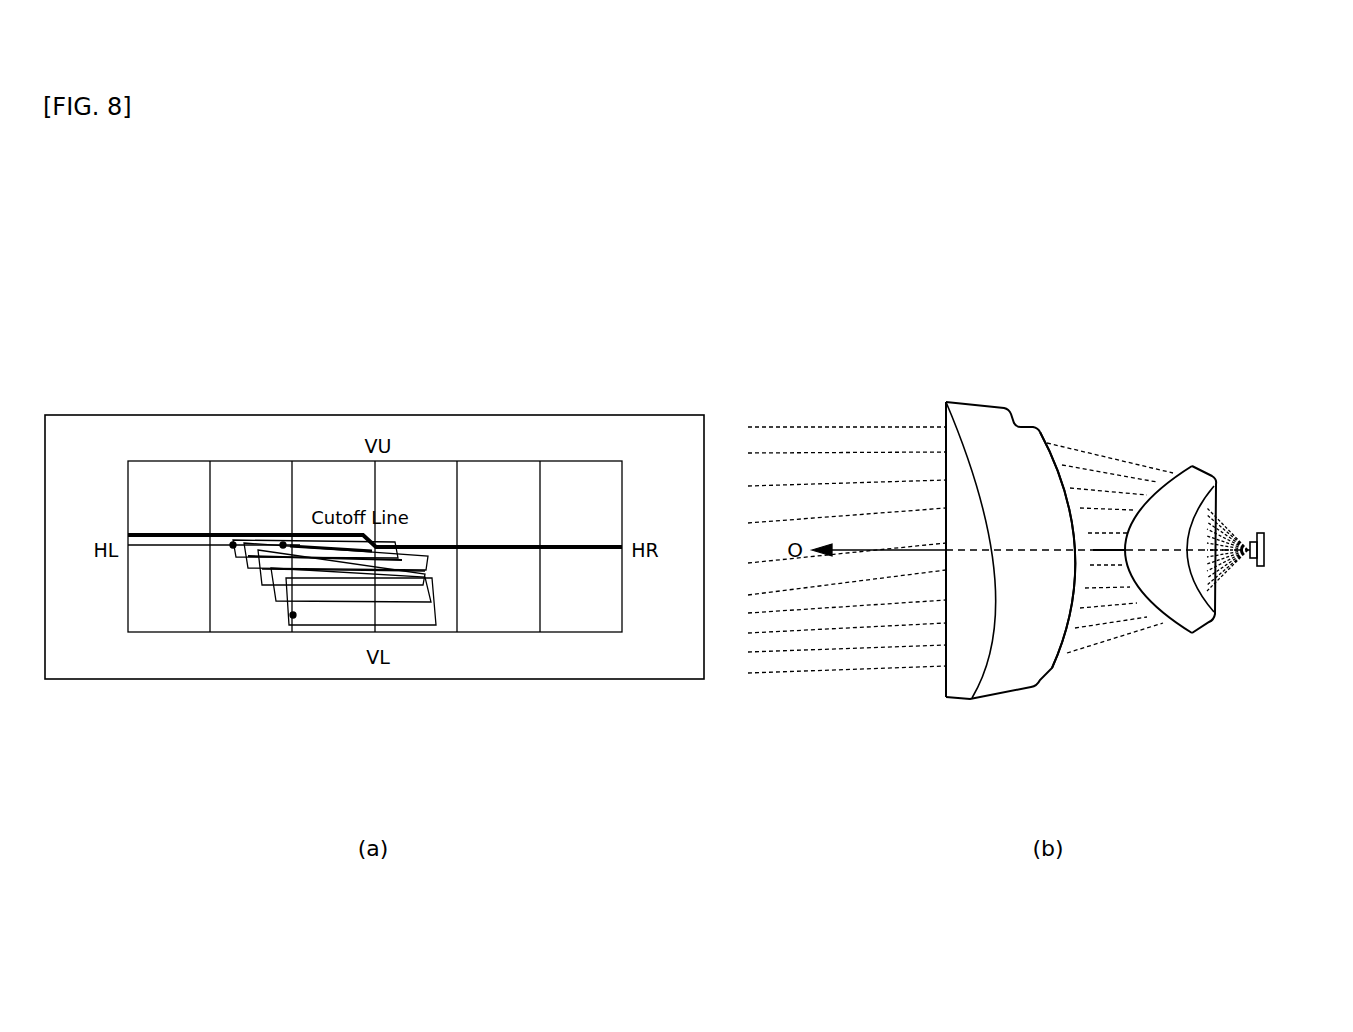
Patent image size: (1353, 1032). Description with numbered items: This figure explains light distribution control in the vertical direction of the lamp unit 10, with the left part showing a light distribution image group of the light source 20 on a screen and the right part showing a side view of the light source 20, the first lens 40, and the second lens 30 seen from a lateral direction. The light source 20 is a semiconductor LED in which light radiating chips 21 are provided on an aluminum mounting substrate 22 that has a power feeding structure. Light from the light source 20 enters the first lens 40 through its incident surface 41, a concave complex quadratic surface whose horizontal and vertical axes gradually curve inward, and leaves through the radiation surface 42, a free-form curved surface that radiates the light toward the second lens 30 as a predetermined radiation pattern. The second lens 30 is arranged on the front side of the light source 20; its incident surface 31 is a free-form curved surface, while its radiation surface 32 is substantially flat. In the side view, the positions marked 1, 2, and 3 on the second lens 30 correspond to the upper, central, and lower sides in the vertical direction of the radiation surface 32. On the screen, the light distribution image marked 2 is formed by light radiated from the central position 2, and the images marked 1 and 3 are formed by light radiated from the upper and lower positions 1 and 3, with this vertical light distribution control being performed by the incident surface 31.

The light distribution image / radiation position 1 is at (236, 542).
The light distribution image / radiation position 2 is at (290, 617).
The light distribution image / radiation position 3 is at (283, 542).
The lamp unit 10 is at (997, 259).
The light source 20 is at (1283, 620).
The light radiating chips 21 is at (1253, 562).
The mounting substrate 22 is at (1262, 568).
The second lens 30 is at (987, 534).
The incident surface 31 is at (1034, 683).
The radiation surface 32 is at (944, 679).
The first lens 40 is at (1206, 535).
The incident surface 41 is at (1218, 494).
The radiation surface 42 is at (1165, 625).